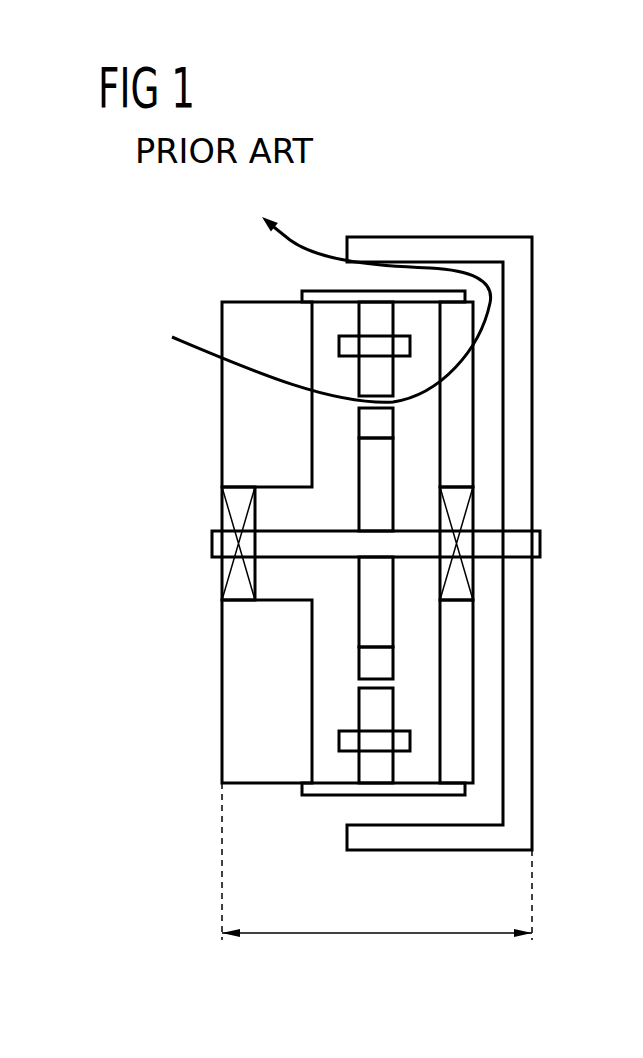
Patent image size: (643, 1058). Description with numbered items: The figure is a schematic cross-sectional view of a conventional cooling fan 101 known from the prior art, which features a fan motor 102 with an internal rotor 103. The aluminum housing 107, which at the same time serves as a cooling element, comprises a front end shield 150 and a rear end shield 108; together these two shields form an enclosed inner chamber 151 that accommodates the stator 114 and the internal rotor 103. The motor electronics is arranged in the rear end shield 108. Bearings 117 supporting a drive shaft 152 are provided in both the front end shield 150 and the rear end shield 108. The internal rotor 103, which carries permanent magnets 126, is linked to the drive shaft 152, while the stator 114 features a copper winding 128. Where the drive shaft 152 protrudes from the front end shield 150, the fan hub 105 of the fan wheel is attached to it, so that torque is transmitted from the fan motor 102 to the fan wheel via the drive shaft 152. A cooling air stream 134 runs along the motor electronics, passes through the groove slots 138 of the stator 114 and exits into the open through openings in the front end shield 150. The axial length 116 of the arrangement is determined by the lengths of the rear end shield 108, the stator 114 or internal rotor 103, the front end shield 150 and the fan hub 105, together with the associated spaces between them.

The cooling fan 101 is at (496, 205).
The fan motor 102 is at (333, 609).
The internal rotor 103 is at (372, 503).
The fan hub 105 is at (520, 290).
The aluminum housing 107 is at (210, 752).
The rear end shield 108 is at (242, 627).
The stator 114 is at (365, 765).
The axial length 116 is at (380, 928).
The bearings 117 is at (222, 522).
The permanent magnets 126 is at (365, 665).
The copper winding 128 is at (349, 347).
The cooling air stream 134 is at (459, 364).
The groove slots 138 is at (360, 684).
The front end shield 150 is at (461, 433).
The inner chamber 151 is at (427, 641).
The drive shaft 152 is at (530, 543).